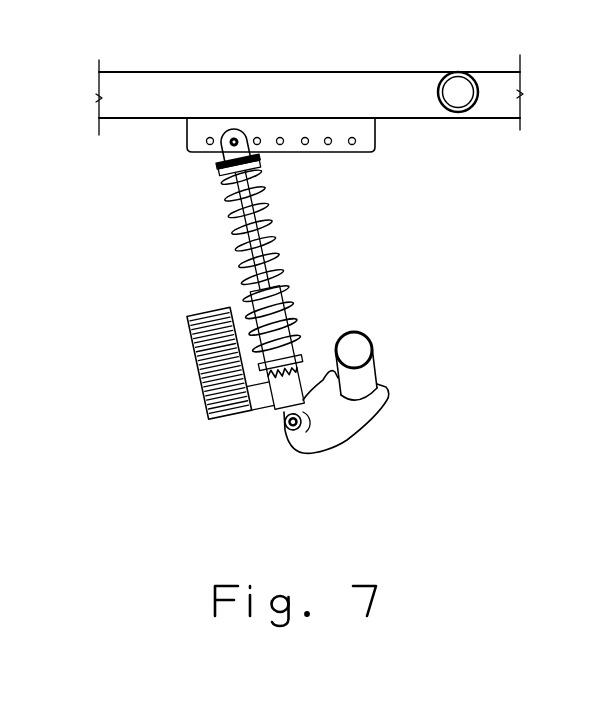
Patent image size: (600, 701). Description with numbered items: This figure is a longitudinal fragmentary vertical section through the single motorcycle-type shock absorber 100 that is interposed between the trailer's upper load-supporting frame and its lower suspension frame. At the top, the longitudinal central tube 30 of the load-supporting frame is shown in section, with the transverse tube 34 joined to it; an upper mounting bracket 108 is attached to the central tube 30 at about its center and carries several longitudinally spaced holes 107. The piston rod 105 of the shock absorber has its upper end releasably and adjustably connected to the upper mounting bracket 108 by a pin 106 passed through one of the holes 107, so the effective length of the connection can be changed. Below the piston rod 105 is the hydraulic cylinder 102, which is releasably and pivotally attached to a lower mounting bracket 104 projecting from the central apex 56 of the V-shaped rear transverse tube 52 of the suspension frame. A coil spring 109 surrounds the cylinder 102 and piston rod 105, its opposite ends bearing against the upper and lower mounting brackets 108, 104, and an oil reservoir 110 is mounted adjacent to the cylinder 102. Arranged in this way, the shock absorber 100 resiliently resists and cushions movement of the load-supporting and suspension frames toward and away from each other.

The longitudinal central tube 30 is at (250, 72).
The transverse tube 34 is at (467, 72).
The upper mounting bracket 108 is at (368, 143).
The longitudinally spaced holes 107 is at (305, 147).
The pin 106 is at (232, 136).
The piston rod 105 is at (233, 183).
The shock absorber 100 is at (212, 259).
The hydraulic cylinder 102 is at (275, 242).
The coil spring 109 is at (250, 268).
The oil reservoir 110 is at (200, 384).
The lower mounting bracket 104 is at (293, 442).
The rear transverse tube 52 is at (348, 333).
The central apex 56 is at (385, 390).